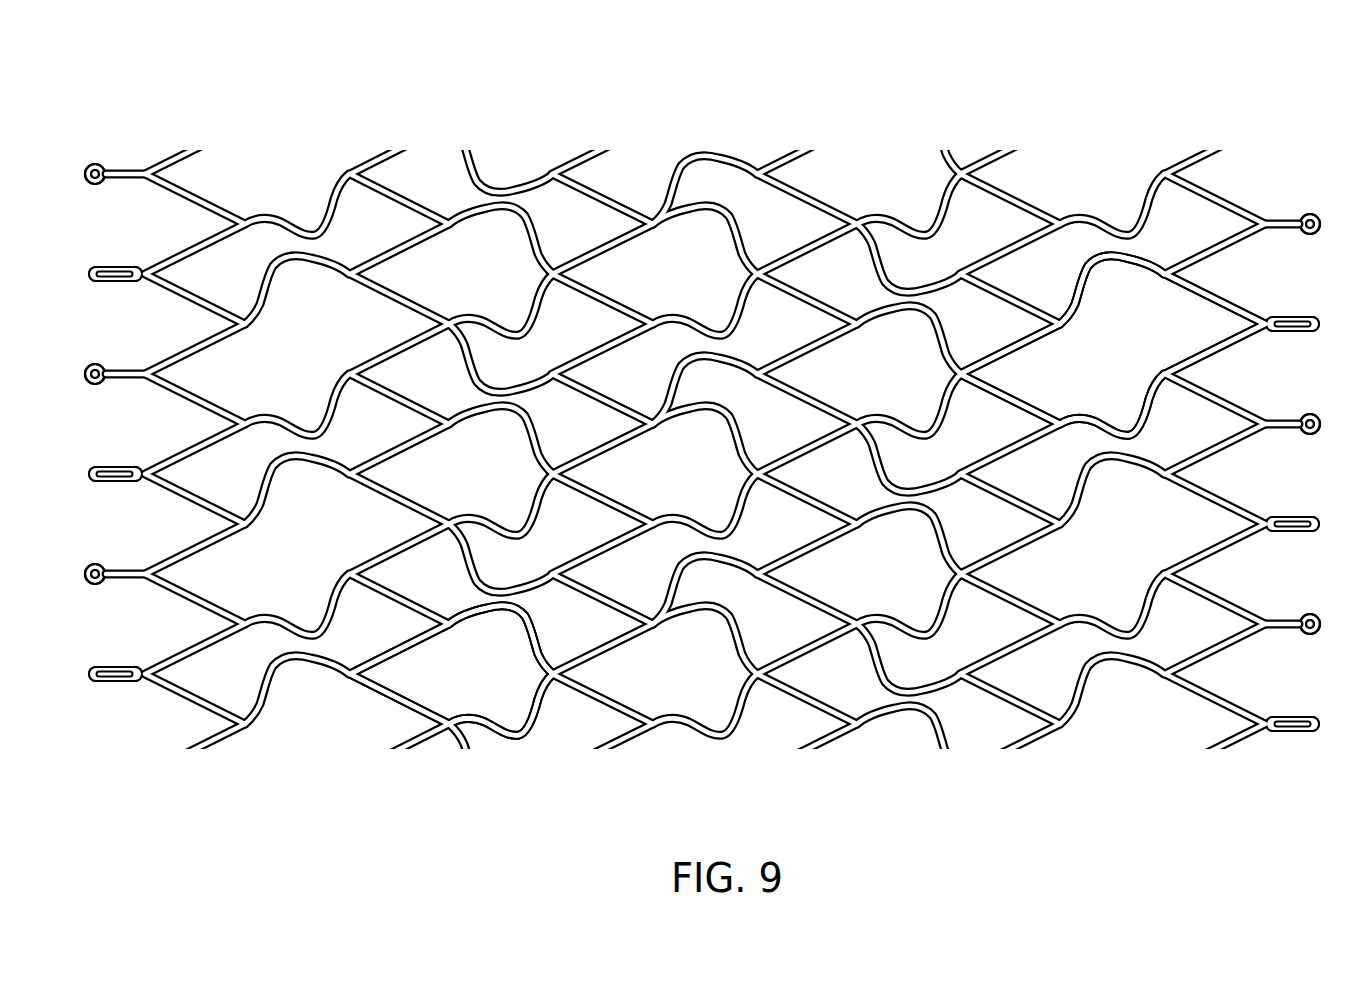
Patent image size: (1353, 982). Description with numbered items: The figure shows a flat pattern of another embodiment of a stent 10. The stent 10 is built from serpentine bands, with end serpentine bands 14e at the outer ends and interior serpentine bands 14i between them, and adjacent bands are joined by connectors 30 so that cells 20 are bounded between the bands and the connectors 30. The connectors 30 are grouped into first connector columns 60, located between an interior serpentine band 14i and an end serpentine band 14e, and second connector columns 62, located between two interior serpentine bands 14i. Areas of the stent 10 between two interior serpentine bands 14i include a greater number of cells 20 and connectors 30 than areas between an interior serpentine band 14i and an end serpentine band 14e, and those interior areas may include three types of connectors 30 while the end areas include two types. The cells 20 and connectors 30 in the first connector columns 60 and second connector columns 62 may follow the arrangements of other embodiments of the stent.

The stent 10 is at (702, 451).
The end serpentine band 14e is at (221, 739).
The interior serpentine band 14i is at (420, 740).
The cell 20 is at (468, 675).
The connector 30 is at (704, 409).
The first connector column 60 is at (704, 375).
The second connector column 62 is at (705, 380).